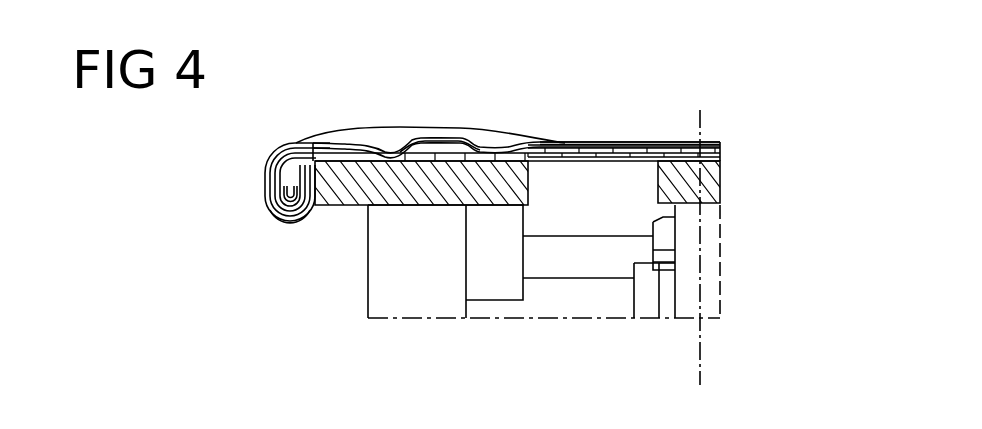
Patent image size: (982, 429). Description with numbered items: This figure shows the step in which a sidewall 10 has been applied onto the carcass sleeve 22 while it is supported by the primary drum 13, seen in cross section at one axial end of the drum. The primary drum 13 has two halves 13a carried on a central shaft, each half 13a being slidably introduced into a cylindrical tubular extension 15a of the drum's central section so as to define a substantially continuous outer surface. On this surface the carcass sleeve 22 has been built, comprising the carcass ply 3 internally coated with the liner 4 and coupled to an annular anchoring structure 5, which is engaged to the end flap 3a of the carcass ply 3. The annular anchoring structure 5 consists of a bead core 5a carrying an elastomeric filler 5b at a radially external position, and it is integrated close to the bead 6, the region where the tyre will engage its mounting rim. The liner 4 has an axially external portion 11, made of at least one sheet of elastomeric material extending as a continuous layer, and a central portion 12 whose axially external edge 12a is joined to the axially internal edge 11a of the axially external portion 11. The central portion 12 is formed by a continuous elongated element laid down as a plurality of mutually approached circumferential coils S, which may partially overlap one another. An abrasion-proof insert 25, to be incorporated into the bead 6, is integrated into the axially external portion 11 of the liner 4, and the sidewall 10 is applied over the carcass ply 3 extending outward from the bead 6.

The carcass ply 3 is at (682, 153).
The end flap 3a is at (316, 146).
The liner 4 is at (496, 172).
The annular anchoring structure 5 is at (282, 149).
The bead core 5a is at (288, 194).
The elastomeric filler 5b is at (306, 144).
The bead 6 is at (256, 181).
The sidewall 10 is at (393, 137).
The axially external portion 11 is at (327, 150).
The axially internal edge 11a is at (420, 147).
The central portion 12 is at (655, 150).
The axially external edge 12a is at (445, 147).
The primary drum 13 is at (740, 233).
The half of the primary drum 13a is at (428, 178).
The cylindrical tubular extension 15a is at (593, 165).
The carcass sleeve 22 is at (728, 152).
The abrasion-proof insert 25 is at (290, 221).
The circumferential coil S is at (596, 153).